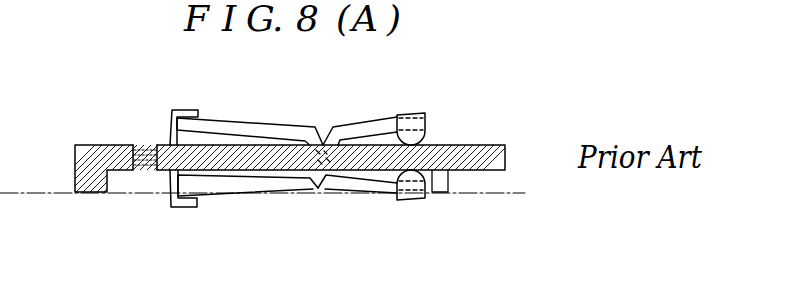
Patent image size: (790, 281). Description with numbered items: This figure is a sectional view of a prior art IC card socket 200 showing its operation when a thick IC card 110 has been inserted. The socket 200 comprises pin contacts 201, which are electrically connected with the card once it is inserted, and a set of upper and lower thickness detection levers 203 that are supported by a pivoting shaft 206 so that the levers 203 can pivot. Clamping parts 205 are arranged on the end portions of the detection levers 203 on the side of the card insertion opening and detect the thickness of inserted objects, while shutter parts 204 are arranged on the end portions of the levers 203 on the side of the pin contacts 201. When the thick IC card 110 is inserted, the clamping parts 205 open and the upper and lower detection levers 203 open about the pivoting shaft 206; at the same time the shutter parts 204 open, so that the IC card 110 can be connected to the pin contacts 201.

The thick IC card 110 is at (465, 144).
The IC card socket 200 is at (96, 146).
The pin contacts 201 is at (146, 145).
The thickness detection levers 203 is at (270, 124).
The shutter parts 204 is at (186, 110).
The clamping parts 205 is at (413, 116).
The pivoting shaft 206 is at (326, 152).